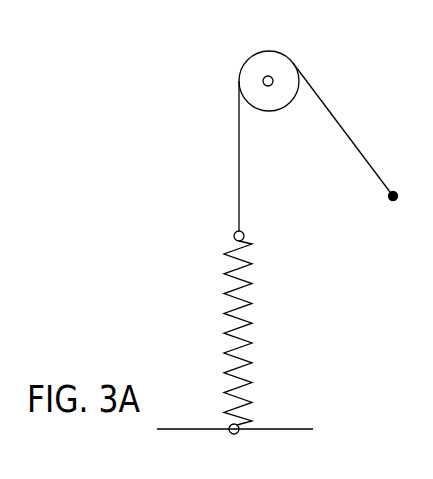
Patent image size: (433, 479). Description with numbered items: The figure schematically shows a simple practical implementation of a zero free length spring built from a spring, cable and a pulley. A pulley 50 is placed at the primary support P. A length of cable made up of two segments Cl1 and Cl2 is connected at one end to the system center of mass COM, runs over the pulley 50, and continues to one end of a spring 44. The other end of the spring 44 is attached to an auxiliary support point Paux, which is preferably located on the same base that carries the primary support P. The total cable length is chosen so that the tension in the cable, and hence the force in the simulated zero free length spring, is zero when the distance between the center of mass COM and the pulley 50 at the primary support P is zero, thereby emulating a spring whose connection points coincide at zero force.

The pulley 50 is at (253, 56).
The primary support P is at (269, 76).
The cable length segment Cl1 is at (238, 152).
The cable length segment Cl2 is at (345, 130).
The system center of mass COM is at (388, 200).
The spring 44 is at (228, 310).
The auxiliary support point Paux is at (232, 436).